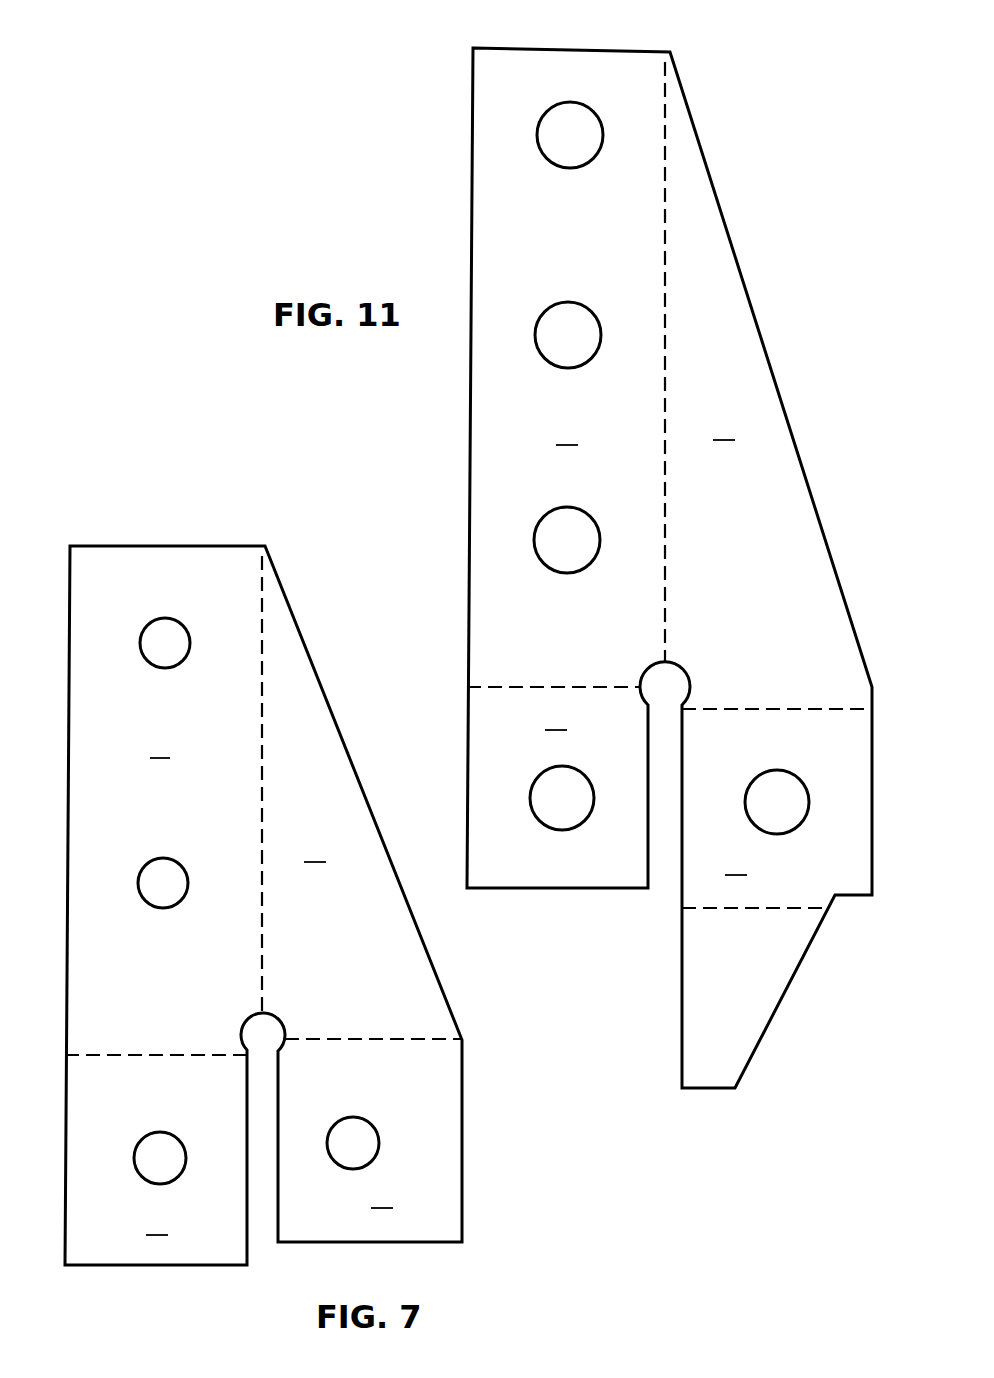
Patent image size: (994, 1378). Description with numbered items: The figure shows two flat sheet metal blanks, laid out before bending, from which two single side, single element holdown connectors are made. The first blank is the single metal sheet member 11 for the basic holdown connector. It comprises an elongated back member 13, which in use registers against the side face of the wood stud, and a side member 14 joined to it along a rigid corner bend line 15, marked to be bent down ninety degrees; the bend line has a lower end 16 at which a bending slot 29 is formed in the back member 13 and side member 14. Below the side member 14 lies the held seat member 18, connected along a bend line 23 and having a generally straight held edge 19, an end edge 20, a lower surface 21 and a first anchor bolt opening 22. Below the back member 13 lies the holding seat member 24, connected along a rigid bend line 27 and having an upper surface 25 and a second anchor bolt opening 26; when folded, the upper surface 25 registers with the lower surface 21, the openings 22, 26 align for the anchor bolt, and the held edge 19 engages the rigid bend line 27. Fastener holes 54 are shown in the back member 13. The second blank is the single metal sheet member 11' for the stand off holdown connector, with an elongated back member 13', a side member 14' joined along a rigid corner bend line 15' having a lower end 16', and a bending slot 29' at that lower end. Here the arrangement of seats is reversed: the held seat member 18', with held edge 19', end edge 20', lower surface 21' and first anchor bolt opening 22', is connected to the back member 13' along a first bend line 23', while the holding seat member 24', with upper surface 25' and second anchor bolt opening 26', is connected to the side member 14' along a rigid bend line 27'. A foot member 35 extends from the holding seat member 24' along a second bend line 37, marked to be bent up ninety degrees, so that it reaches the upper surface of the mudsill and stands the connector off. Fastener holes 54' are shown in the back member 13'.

In FIG. 7, the single metal sheet member 11 is at (248, 905).
In FIG. 7, the elongated back member 13 is at (163, 747).
In FIG. 7, the side member 14 is at (317, 851).
In FIG. 7, the rigid corner bend line 15 is at (292, 784).
In FIG. 7, the lower end of rigid corner bend line 16 is at (295, 997).
In FIG. 7, the held seat member 18 is at (506, 1117).
In FIG. 7, the held edge 19 is at (304, 1074).
In FIG. 7, the end edge 20 is at (435, 1260).
In FIG. 7, the lower surface of held seat member 21 is at (384, 1197).
In FIG. 7, the first anchor bolt opening 22 is at (375, 1127).
In FIG. 7, the bend line 23 is at (373, 1048).
In FIG. 7, the holding seat member 24 is at (73, 1270).
In FIG. 7, the upper surface of holding seat member 25 is at (159, 1224).
In FIG. 7, the second anchor bolt opening 26 is at (178, 1140).
In FIG. 7, the rigid bend line 27 is at (156, 1073).
In FIG. 7, the bending slot 29 is at (231, 996).
In FIG. 7, the mounting hole 54 is at (180, 744).
In FIG. 11, the single metal sheet member 11' is at (606, 568).
In FIG. 11, the elongated back member 13' is at (572, 434).
In FIG. 11, the side member 14' is at (729, 429).
In FIG. 11, the rigid corner bend line 15' is at (692, 362).
In FIG. 11, the lower end of rigid corner bend line 16' is at (643, 626).
In FIG. 11, the held seat member 18' is at (432, 769).
In FIG. 11, the held edge 19' is at (652, 905).
In FIG. 11, the end edge 20' is at (549, 923).
In FIG. 11, the lower surface of held seat member 21' is at (561, 719).
In FIG. 11, the first anchor bolt opening 22' is at (583, 786).
In FIG. 11, the first bend line 23' is at (553, 705).
In FIG. 11, the holding seat member 24' is at (852, 909).
In FIG. 11, the upper surface of holding seat member 25' is at (741, 864).
In FIG. 11, the second anchor bolt opening 26' is at (799, 794).
In FIG. 11, the rigid bend line 27' is at (777, 729).
In FIG. 11, the bending slot 29' is at (716, 656).
In FIG. 11, the foot member 35 is at (777, 1017).
In FIG. 11, the second bend line 37 is at (777, 908).
In FIG. 11, the mounting hole 54' is at (590, 328).